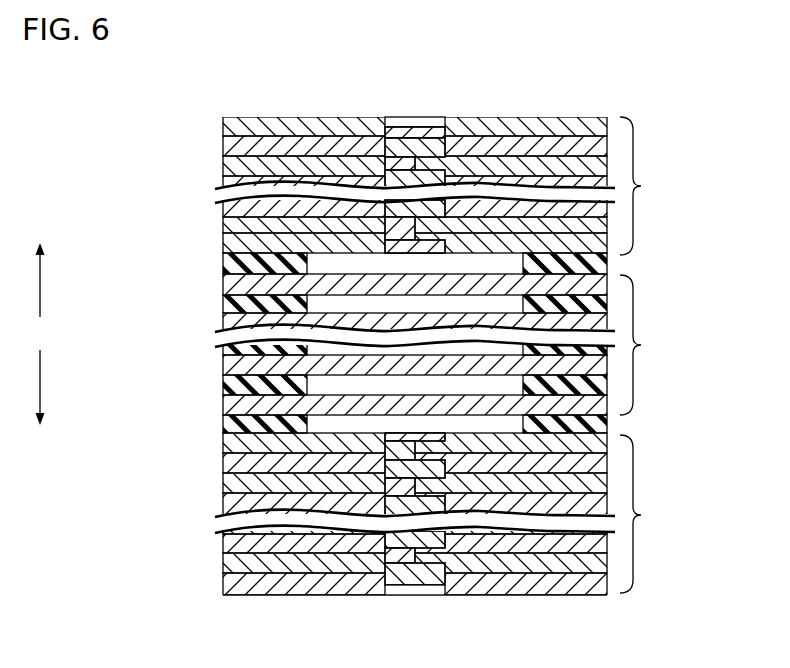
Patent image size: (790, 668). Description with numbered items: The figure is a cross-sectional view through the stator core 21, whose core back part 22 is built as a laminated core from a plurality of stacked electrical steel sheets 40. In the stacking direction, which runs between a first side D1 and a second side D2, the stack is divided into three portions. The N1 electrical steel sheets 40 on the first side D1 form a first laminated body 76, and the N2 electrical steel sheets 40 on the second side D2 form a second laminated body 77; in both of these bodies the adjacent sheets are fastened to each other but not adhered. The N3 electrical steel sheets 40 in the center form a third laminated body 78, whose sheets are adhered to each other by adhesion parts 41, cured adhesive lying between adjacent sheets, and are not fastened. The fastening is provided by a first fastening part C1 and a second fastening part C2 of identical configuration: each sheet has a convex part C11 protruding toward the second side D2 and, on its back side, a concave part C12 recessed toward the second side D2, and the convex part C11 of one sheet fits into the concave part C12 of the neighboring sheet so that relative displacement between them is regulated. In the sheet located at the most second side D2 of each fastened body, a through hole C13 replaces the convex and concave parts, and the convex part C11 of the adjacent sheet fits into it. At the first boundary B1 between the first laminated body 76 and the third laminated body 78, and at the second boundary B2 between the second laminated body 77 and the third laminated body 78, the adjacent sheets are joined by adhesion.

The stator core 21 is at (132, 118).
The first laminated body 76 is at (180, 165).
The second laminated body 77 is at (183, 518).
The third laminated body 78 is at (180, 322).
The first fastening part C1 is at (454, 129).
The second fastening part C2 is at (404, 490).
The convex part C11 is at (395, 170).
The concave part C12 is at (415, 160).
The through hole C13 is at (393, 238).
The N1 electrical steel sheets N1 is at (649, 186).
The N2 electrical steel sheets N2 is at (650, 514).
The N3 electrical steel sheets N3 is at (650, 345).
The adhesion part 41 is at (442, 346).
The first boundary B1 is at (644, 260).
The second boundary B2 is at (644, 418).
The first side D1 is at (56, 280).
The second side D2 is at (56, 387).
The core back part 22 is at (379, 565).
The electrical steel sheet 40 is at (597, 585).